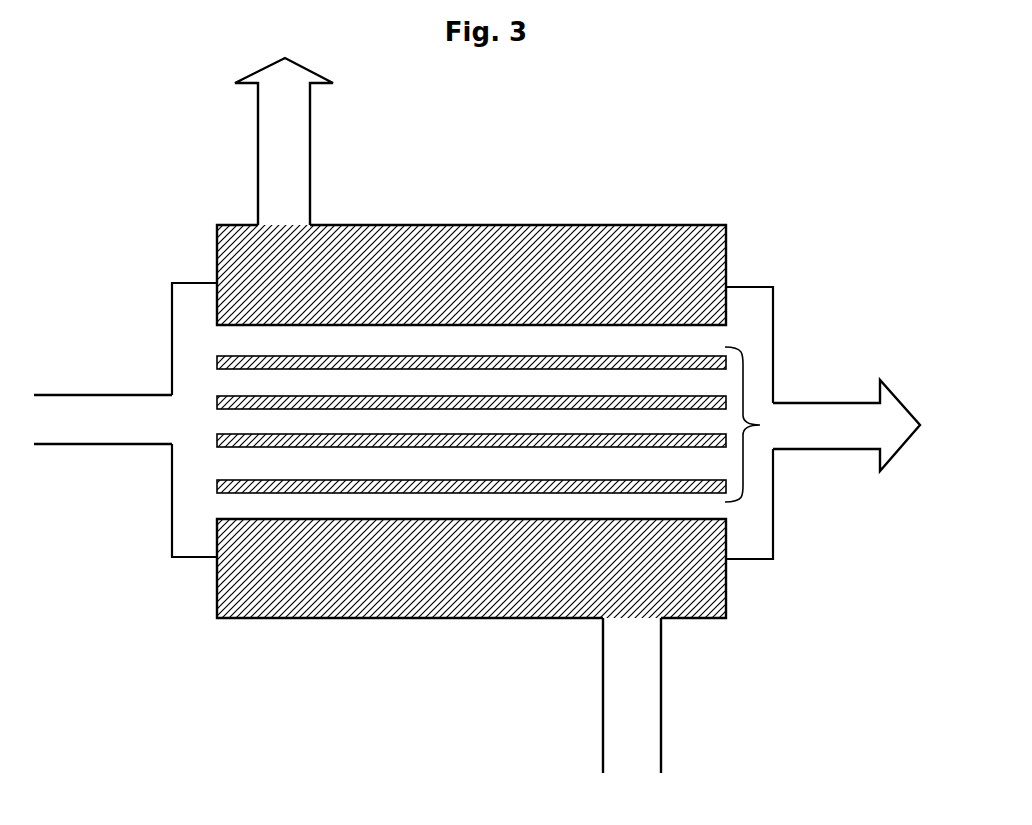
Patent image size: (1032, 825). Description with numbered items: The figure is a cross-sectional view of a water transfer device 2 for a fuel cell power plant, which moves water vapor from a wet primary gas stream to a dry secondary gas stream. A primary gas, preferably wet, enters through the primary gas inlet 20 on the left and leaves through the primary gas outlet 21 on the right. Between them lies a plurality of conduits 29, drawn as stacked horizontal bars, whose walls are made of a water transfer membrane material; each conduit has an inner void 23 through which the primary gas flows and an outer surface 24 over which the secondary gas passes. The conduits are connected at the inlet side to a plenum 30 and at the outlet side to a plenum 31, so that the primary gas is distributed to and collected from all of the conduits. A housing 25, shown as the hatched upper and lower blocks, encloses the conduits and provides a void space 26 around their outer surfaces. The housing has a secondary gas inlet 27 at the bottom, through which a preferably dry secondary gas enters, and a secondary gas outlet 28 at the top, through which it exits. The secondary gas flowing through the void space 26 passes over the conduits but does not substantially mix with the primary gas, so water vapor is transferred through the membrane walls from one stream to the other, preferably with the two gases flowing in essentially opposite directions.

The water transfer device 2 is at (499, 372).
The primary gas inlet 20 is at (158, 412).
The primary gas outlet 21 is at (808, 410).
The inner void 23 is at (703, 337).
The outer surface 24 is at (610, 327).
The housing 25 is at (270, 618).
The void space 26 is at (218, 355).
The secondary gas inlet 27 is at (647, 637).
The secondary gas outlet 28 is at (297, 211).
The plurality of conduits 29 is at (760, 425).
The plenum 30 is at (192, 498).
The plenum 31 is at (752, 532).